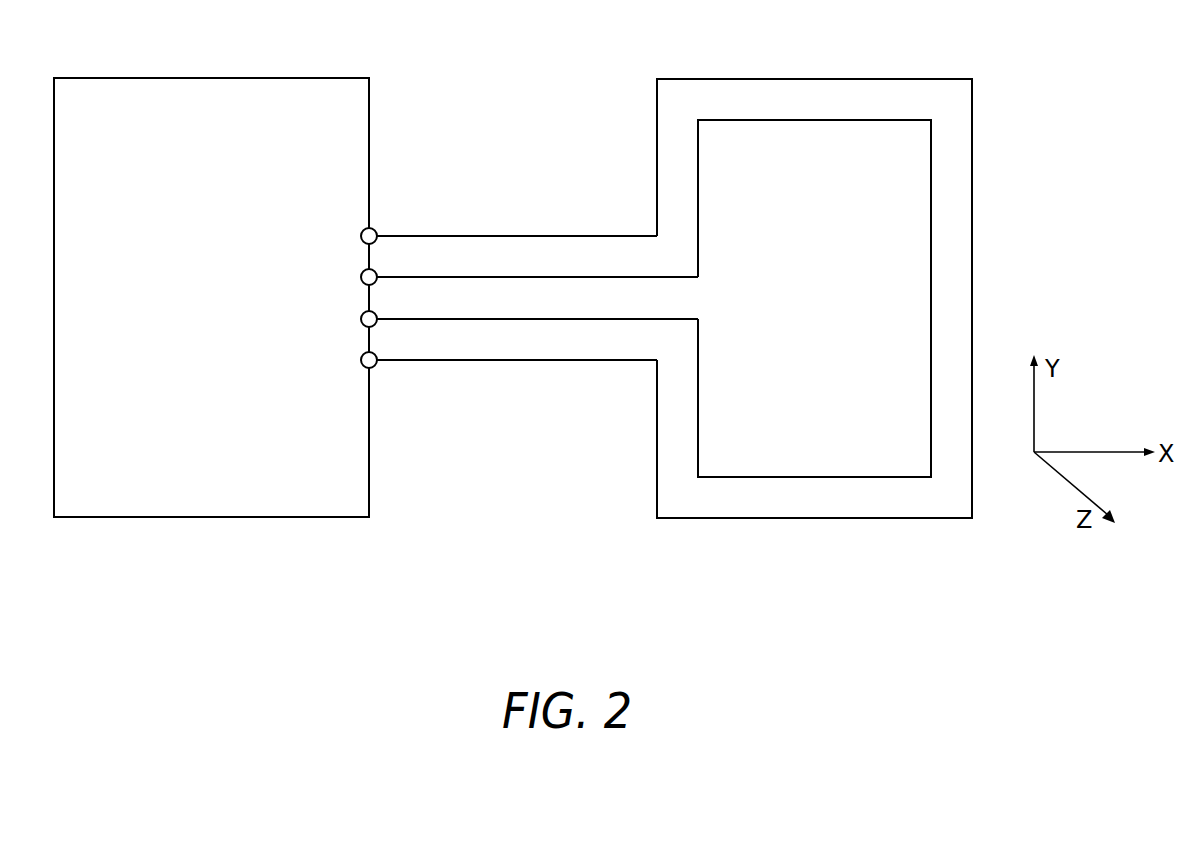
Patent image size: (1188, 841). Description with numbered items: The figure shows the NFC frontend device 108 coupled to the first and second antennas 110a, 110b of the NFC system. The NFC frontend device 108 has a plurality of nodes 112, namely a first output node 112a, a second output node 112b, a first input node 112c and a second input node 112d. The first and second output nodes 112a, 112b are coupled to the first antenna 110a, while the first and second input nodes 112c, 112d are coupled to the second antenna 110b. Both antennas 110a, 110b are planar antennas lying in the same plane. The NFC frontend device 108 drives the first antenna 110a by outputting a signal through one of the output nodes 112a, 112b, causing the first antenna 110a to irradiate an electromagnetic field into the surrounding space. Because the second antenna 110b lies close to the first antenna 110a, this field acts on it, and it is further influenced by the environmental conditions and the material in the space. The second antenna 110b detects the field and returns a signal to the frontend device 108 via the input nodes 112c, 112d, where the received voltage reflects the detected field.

The NFC frontend device 108 is at (238, 78).
The first antenna 110a is at (840, 79).
The second antenna 110b is at (763, 120).
The nodes 112 is at (392, 381).
The first output node 112a is at (361, 236).
The second output node 112b is at (361, 361).
The first input node 112c is at (361, 277).
The second input node 112d is at (361, 320).